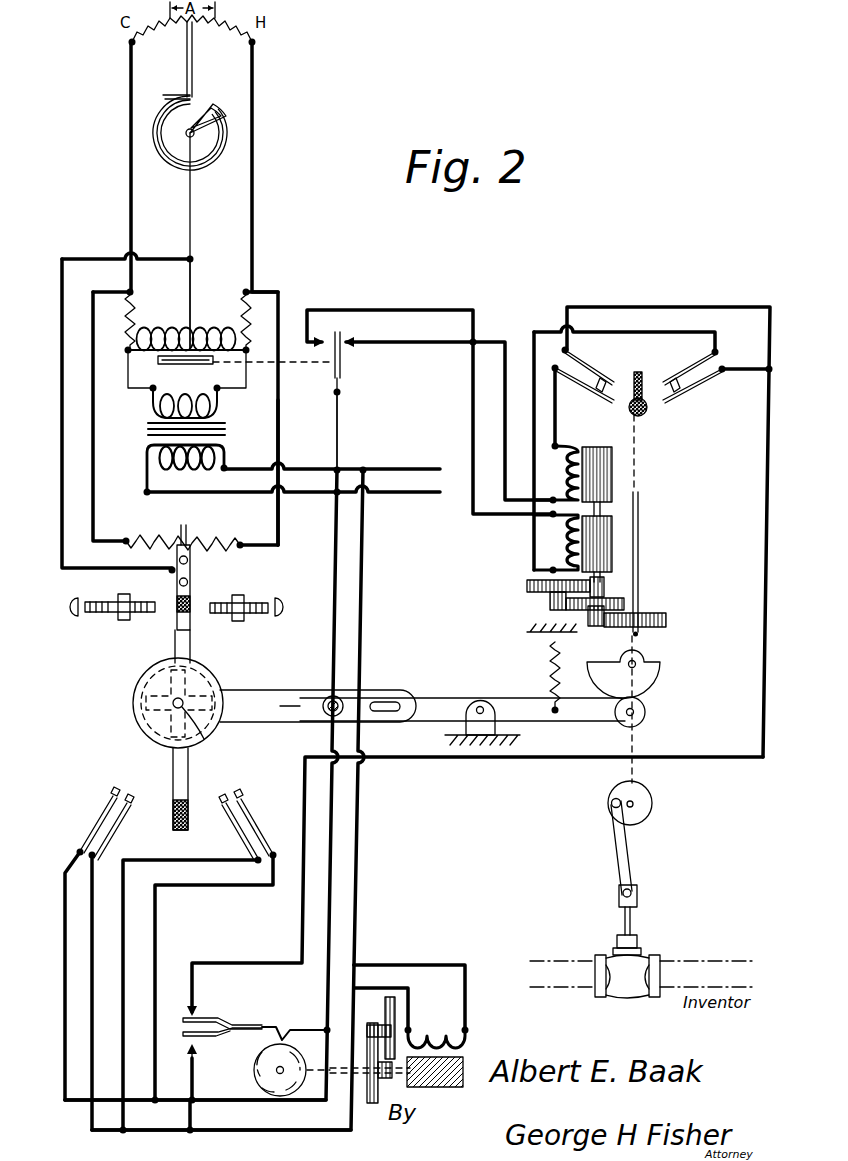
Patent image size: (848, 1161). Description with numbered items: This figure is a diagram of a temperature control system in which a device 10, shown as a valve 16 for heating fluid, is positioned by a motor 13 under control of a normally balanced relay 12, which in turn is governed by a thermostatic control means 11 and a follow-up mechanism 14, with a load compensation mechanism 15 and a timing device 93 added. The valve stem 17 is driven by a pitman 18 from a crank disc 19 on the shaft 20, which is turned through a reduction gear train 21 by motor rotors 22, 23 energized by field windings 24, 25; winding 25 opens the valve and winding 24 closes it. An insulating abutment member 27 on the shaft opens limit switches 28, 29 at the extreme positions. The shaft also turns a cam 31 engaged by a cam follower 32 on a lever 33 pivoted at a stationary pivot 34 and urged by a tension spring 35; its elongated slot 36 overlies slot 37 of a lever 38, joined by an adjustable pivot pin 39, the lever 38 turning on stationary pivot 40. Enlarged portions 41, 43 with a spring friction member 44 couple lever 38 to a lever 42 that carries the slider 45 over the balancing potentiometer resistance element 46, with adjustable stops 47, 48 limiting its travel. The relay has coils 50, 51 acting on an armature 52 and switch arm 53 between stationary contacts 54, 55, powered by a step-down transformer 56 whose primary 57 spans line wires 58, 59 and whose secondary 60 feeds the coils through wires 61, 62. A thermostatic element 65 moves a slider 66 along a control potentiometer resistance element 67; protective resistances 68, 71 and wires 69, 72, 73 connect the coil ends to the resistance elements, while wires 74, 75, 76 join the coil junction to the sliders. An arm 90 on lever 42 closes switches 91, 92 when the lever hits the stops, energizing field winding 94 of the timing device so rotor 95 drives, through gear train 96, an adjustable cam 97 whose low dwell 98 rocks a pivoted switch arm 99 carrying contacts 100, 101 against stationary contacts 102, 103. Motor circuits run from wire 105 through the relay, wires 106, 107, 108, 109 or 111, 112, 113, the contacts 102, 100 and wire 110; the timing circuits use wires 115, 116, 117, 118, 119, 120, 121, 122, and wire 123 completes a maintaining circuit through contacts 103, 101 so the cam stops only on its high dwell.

The device to be positioned 10 is at (642, 955).
The control means 11 is at (219, 280).
The normally balanced relay 12 is at (251, 393).
The motor 13 is at (650, 514).
The follow-up mechanism 14 is at (172, 444).
The automatic reset or load compensation mechanism 15 is at (156, 729).
The valve 16 is at (620, 964).
The valve stem 17 is at (624, 920).
The pitman 18 is at (632, 870).
The crank disc 19 is at (652, 804).
The shaft 20 is at (652, 548).
The reduction gear train 21 is at (598, 626).
The motor rotor 22 is at (608, 538).
The motor rotor 23 is at (613, 470).
The field winding 24 is at (560, 546).
The field winding 25 is at (560, 476).
The abutment member 27 is at (638, 372).
The limit switch 28 is at (592, 392).
The limit switch 29 is at (670, 402).
The cam 31 is at (659, 672).
The cam follower 32 is at (646, 720).
The lever 33 is at (462, 688).
The stationary pivot 34 is at (478, 704).
The tension spring 35 is at (550, 664).
The elongated slot 36 is at (390, 704).
The elongated slot 37 is at (286, 722).
The lever 38 is at (324, 706).
The pivot pin 39 is at (326, 700).
The stationary pivot 40 is at (204, 742).
The enlarged portion 41 is at (212, 672).
The lever 42 is at (175, 640).
The enlarged portion 43 is at (144, 674).
The spring friction member 44 is at (140, 688).
The slider 45 is at (174, 546).
The balancing potentiometer resistance element 46 is at (196, 532).
The adjustable stop 47 is at (143, 602).
The adjustable stop 48 is at (224, 552).
The relay coil 50 is at (165, 332).
The relay coil 51 is at (207, 332).
The armature 52 is at (185, 363).
The switch arm 53 is at (340, 370).
The stationary contact 54 is at (320, 338).
The stationary contact 55 is at (358, 340).
The step-down transformer 56 is at (162, 456).
The primary 57 is at (184, 464).
The line wire 58 is at (308, 466).
The line wire 59 is at (297, 490).
The secondary 60 is at (180, 394).
The wire 61 is at (128, 384).
The wire 62 is at (248, 386).
The thermostatic element 65 is at (170, 166).
The slider 66 is at (194, 52).
The control potentiometer resistance element 67 is at (173, 40).
The protective resistance 68 is at (132, 308).
The wire 69 is at (133, 211).
The protective resistance 71 is at (239, 316).
The wire 72 is at (252, 205).
The wire 73 is at (280, 434).
The wire 74 is at (190, 284).
The wire 75 is at (189, 213).
The wire 76 is at (62, 562).
The arm 90 is at (175, 786).
The switch 91 is at (100, 806).
The switch 92 is at (246, 814).
The timing device 93 is at (414, 968).
The field winding 94 is at (436, 1030).
The motor rotor 95 is at (458, 1064).
The reduction gear train 96 is at (386, 1004).
The adjustable cam 97 is at (266, 1073).
The low dwell 98 is at (264, 1090).
The pivoted switch arm 99 is at (266, 1024).
The contact 100 is at (206, 1020).
The contact 101 is at (202, 1036).
The stationary contact 102 is at (190, 1012).
The stationary contact 103 is at (188, 1034).
The wire 105 is at (338, 438).
The wire 106 is at (450, 409).
The wire 107 is at (558, 430).
The wire 108 is at (680, 307).
The wire 109 is at (764, 662).
The wire 110 is at (334, 564).
The wire 111 is at (432, 395).
The wire 112 is at (628, 332).
The wire 113 is at (744, 370).
The wire 115 is at (362, 648).
The wire 116 is at (306, 1130).
The wire 117 is at (150, 1128).
The wire 118 is at (94, 1020).
The wire 119 is at (64, 1040).
The wire 120 is at (234, 1104).
The wire 121 is at (124, 966).
The wire 122 is at (156, 954).
The wire 123 is at (192, 1086).